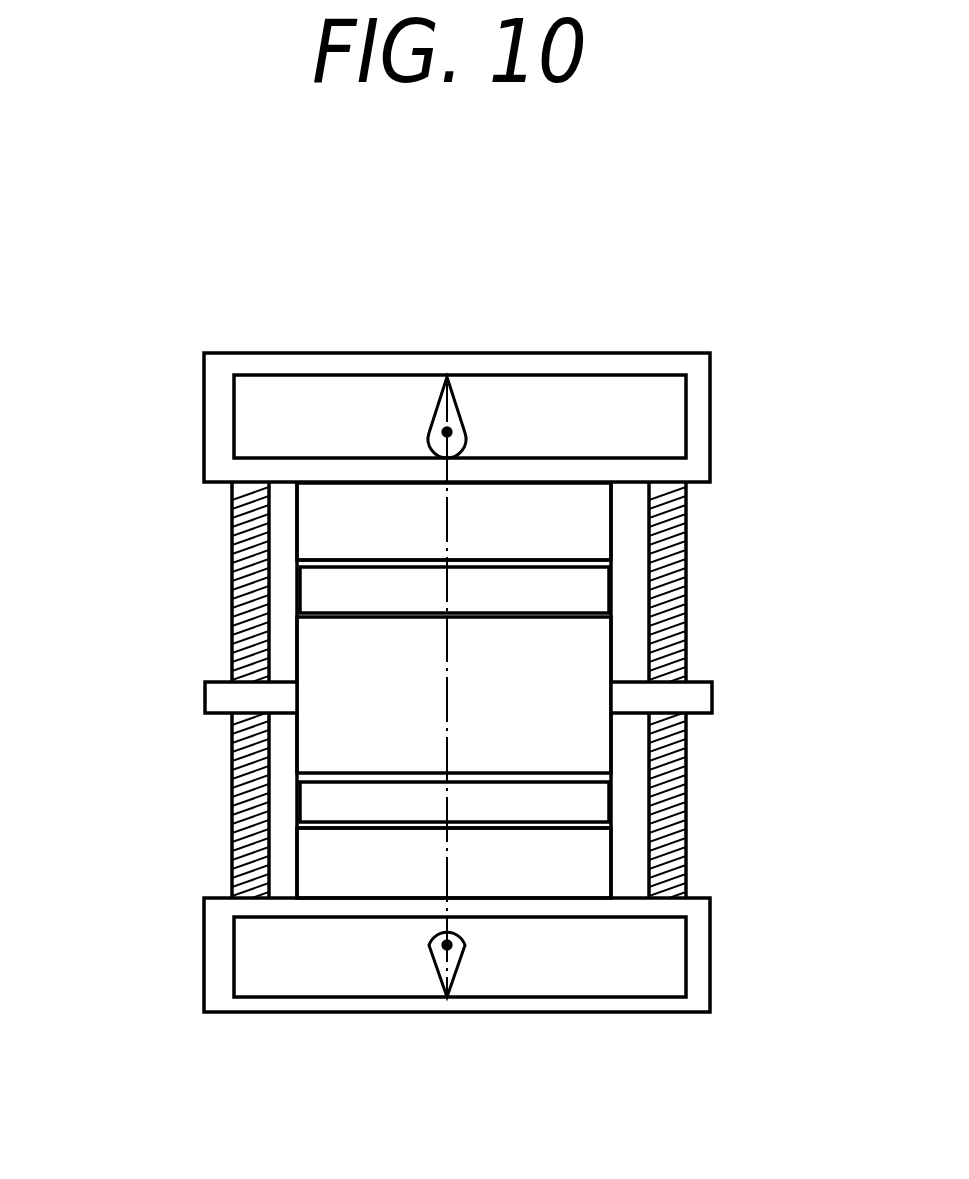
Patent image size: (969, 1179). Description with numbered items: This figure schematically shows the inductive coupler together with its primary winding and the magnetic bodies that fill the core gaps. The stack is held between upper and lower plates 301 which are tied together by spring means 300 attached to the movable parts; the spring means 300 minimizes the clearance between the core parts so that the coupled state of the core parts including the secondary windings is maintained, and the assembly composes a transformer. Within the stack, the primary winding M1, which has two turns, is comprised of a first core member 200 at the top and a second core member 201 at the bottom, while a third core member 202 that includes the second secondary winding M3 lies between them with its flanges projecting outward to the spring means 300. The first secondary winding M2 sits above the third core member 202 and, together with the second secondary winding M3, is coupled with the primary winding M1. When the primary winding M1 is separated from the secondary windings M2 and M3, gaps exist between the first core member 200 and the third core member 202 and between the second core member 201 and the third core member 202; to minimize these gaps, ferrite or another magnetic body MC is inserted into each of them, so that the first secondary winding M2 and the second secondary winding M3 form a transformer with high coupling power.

The end plate 301 is at (667, 416).
The spring means 300 is at (678, 503).
The first core member 200 is at (357, 512).
The second core member 201 is at (347, 860).
The third core member 202 is at (580, 730).
The primary winding M1 is at (327, 523).
The first secondary winding M2 is at (325, 644).
The second secondary winding M3 is at (323, 742).
The magnetic body MC is at (588, 588).